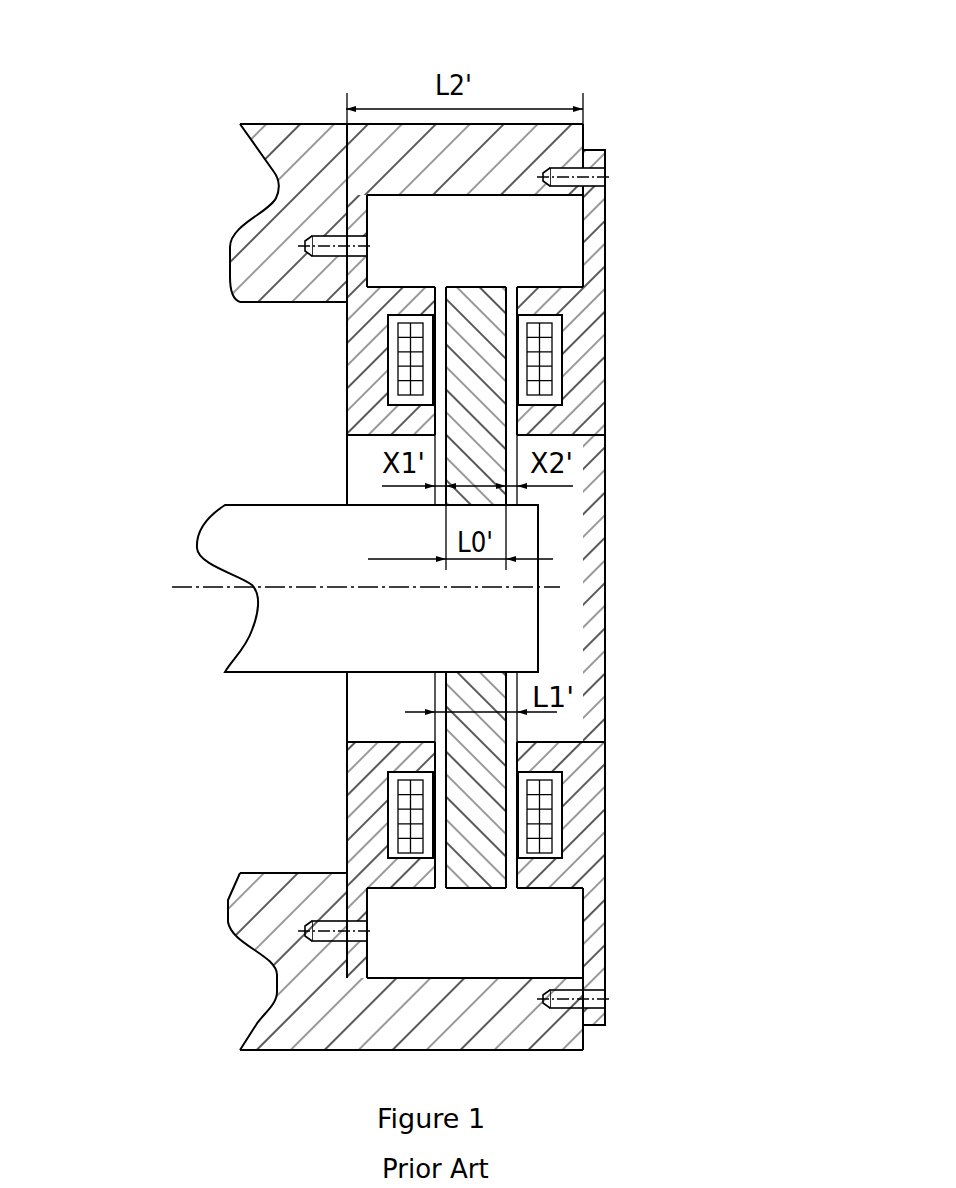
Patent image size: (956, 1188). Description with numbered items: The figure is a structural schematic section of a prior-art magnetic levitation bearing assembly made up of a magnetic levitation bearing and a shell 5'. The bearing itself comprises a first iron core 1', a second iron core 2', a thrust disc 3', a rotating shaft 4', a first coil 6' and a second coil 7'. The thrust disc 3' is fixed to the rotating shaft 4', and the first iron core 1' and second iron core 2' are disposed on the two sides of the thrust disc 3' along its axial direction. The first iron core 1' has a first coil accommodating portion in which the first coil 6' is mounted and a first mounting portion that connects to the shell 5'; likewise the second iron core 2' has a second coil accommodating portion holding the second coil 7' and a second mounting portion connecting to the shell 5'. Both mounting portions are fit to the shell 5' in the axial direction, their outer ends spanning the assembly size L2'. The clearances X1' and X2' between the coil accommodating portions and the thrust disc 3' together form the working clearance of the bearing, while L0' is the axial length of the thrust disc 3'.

The first iron core 1' is at (346, 574).
The second iron core 2' is at (680, 587).
The thrust disc 3' is at (544, 447).
The rotating shaft 4' is at (321, 514).
The shell 5' is at (510, 958).
The first coil 6' is at (321, 268).
The second coil 7' is at (590, 781).